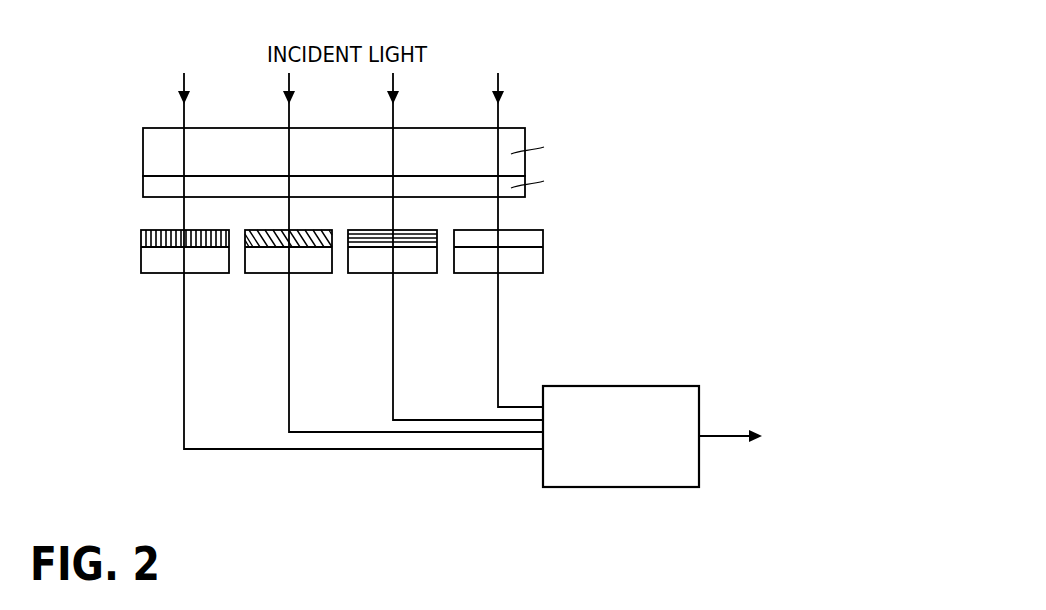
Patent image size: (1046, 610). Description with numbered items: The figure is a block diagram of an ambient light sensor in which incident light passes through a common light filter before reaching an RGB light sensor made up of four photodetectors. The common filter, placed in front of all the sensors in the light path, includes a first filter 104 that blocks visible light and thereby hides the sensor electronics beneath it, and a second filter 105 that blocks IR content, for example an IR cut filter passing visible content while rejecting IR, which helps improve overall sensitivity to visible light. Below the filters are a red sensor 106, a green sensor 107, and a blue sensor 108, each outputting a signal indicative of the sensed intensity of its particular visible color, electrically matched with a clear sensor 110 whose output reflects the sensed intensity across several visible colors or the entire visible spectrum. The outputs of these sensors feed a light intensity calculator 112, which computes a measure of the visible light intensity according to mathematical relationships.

The first filter 104 is at (152, 150).
The second filter 105 is at (152, 184).
The red sensor 106 is at (141, 257).
The green sensor 107 is at (260, 268).
The blue sensor 108 is at (358, 268).
The clear sensor 110 is at (462, 268).
The light intensity calculator 112 is at (577, 385).